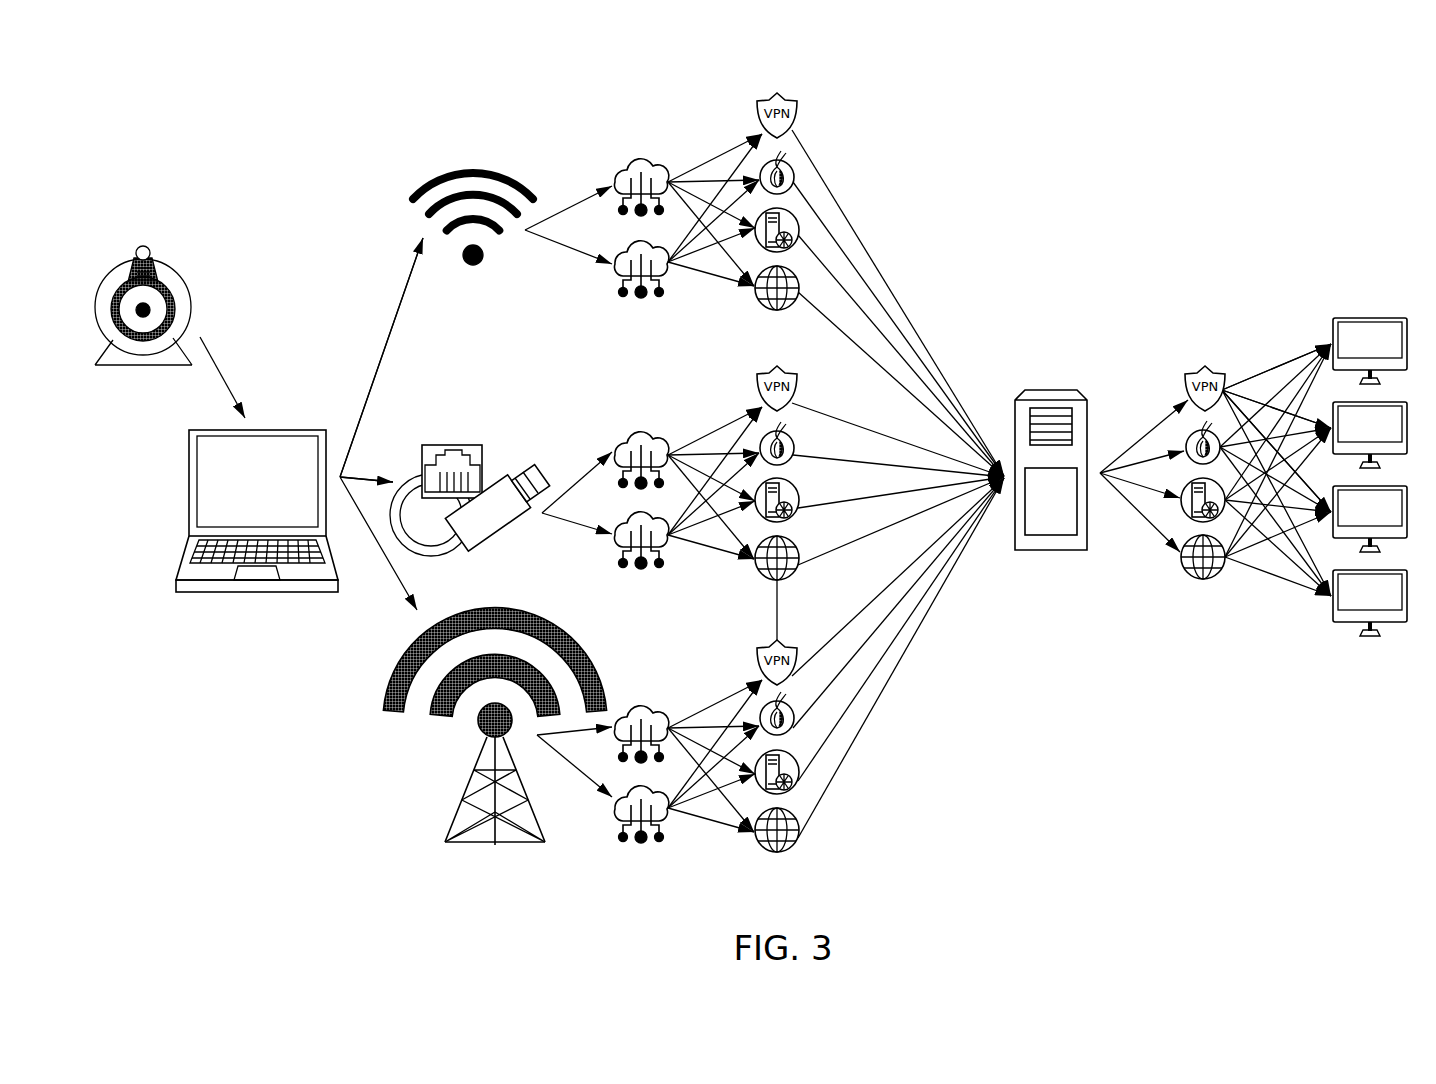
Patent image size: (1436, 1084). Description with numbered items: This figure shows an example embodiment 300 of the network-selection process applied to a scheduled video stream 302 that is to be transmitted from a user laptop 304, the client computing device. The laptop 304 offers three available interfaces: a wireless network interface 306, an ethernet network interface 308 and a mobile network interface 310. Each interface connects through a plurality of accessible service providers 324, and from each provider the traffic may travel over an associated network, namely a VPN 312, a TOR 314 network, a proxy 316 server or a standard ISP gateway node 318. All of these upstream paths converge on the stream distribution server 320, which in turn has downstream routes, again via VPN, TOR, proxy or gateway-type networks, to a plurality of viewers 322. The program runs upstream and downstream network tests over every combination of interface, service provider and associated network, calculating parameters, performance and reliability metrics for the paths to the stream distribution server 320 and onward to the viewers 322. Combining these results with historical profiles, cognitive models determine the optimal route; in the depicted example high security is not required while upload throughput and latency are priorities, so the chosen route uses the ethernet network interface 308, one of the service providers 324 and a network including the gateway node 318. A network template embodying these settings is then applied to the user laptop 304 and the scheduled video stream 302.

The system 300 is at (1205, 113).
The scheduled video stream 302 is at (177, 182).
The user laptop 304 is at (280, 625).
The wireless network interface 306 is at (420, 144).
The ethernet network interface 308 is at (518, 397).
The mobile network interface 310 is at (520, 897).
The VPN 312 is at (865, 120).
The TOR 314 is at (884, 180).
The proxy 316 is at (936, 233).
The gateway node 318 is at (1008, 287).
The stream distribution server 320 is at (1095, 635).
The viewers 322 is at (1365, 279).
The service providers 324 is at (640, 97).